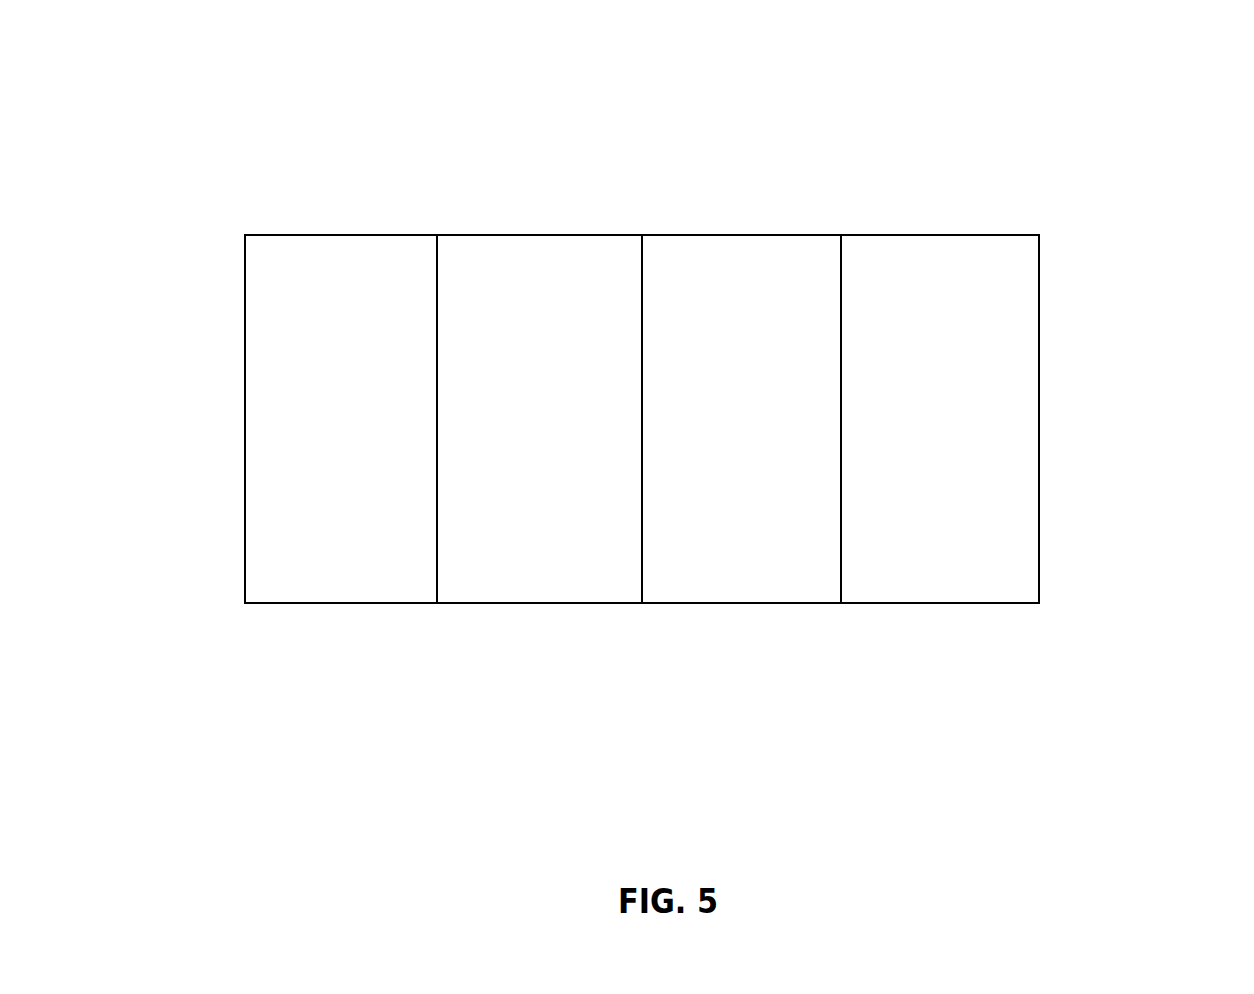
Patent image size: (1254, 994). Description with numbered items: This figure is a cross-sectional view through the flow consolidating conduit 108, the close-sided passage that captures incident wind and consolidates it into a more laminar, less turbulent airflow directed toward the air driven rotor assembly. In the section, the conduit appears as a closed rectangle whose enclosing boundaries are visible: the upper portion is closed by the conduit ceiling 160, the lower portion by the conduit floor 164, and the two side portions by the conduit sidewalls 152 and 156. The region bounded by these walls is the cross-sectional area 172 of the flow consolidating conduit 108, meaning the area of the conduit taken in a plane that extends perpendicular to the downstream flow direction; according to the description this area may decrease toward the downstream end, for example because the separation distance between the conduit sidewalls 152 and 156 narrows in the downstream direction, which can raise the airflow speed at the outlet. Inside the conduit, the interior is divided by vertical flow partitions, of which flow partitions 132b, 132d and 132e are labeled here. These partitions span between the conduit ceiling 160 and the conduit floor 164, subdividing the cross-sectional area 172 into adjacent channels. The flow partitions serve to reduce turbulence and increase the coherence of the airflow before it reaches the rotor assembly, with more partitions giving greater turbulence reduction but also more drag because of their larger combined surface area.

The flow consolidating conduit 108 is at (320, 78).
The conduit sidewall 152 is at (245, 346).
The conduit sidewall 156 is at (1039, 366).
The conduit ceiling 160 is at (734, 235).
The conduit floor 164 is at (702, 604).
The cross-sectional area 172 is at (525, 295).
The flow partition 132b is at (437, 423).
The flow partition 132d is at (642, 497).
The flow partition 132e is at (841, 485).